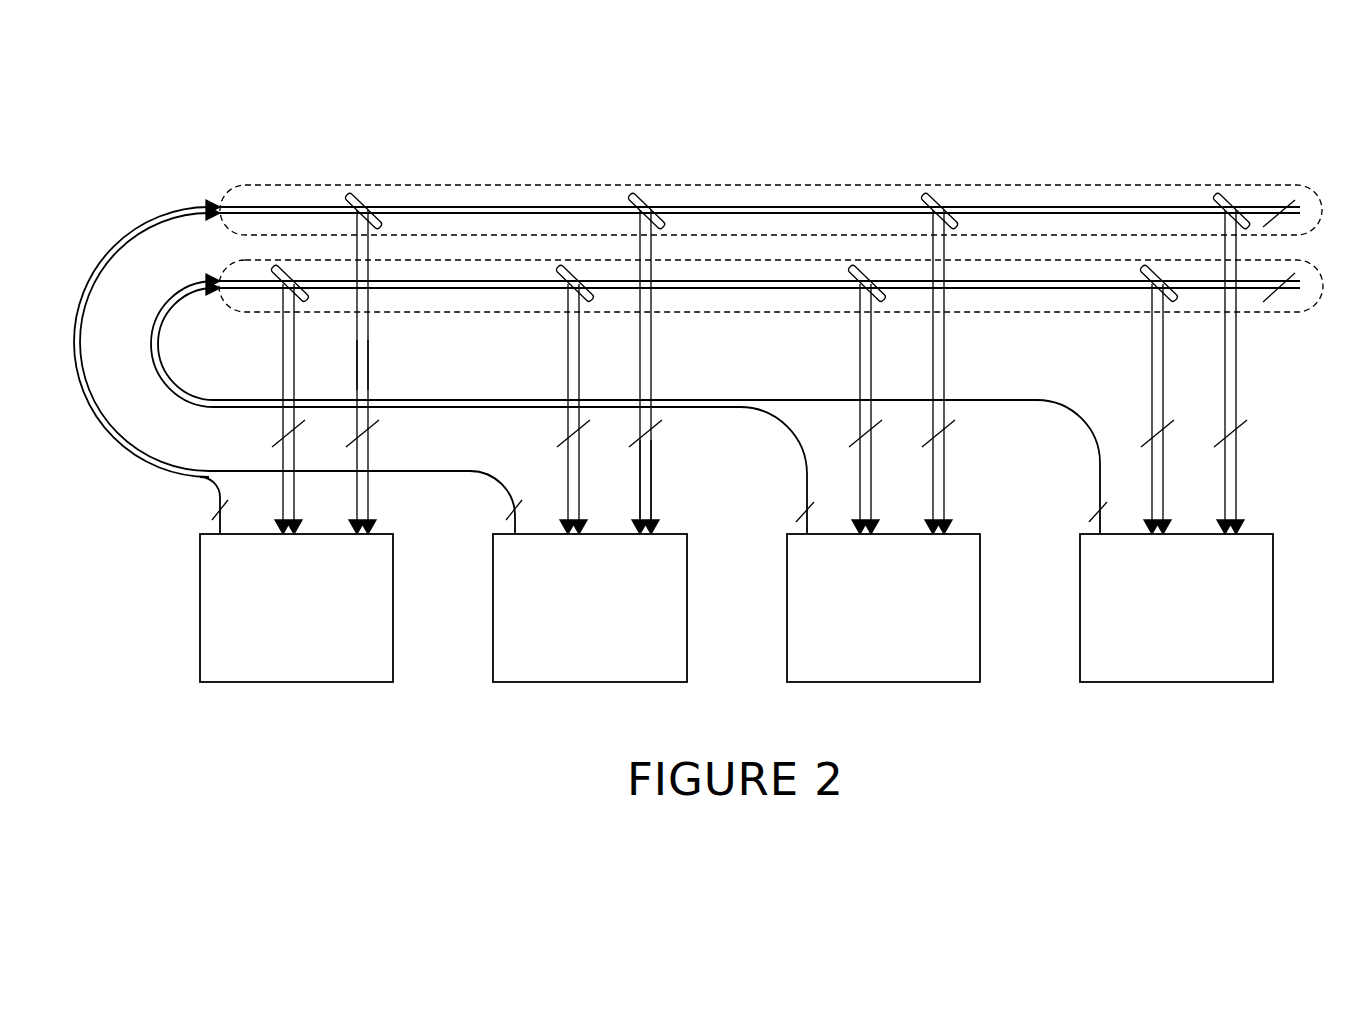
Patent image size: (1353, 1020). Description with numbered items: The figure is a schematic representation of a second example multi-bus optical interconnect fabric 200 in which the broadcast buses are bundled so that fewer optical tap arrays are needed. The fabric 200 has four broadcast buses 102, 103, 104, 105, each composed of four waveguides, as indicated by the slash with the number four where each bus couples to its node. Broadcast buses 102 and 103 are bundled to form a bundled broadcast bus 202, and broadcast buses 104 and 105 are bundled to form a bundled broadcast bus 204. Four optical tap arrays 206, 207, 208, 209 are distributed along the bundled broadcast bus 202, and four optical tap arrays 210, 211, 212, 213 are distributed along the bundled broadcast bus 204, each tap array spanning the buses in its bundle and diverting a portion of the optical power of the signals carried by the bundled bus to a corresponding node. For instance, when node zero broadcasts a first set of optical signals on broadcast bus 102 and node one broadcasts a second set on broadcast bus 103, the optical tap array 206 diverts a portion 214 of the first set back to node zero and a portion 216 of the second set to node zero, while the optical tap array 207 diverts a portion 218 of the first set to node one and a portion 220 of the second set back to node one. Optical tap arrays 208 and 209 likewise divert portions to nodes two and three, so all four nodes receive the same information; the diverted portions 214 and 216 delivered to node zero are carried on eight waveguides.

The multi-bus optical interconnect fabric 200 is at (708, 380).
The bundled broadcast bus 202 is at (1305, 188).
The bundled broadcast bus 204 is at (1288, 312).
The optical tap array 206 is at (348, 196).
The optical tap array 207 is at (631, 196).
The optical tap array 208 is at (924, 196).
The optical tap array 209 is at (1216, 196).
The optical tap array 210 is at (309, 300).
The optical tap array 211 is at (594, 300).
The optical tap array 212 is at (886, 300).
The optical tap array 213 is at (1178, 300).
The portion of optical power 214 is at (355, 395).
The portion of optical power 216 is at (368, 365).
The portion of optical power 218 is at (640, 510).
The portion of optical power 220 is at (655, 478).
The broadcast bus 102 is at (173, 473).
The broadcast bus 103 is at (495, 483).
The broadcast bus 104 is at (795, 445).
The broadcast bus 105 is at (1090, 447).